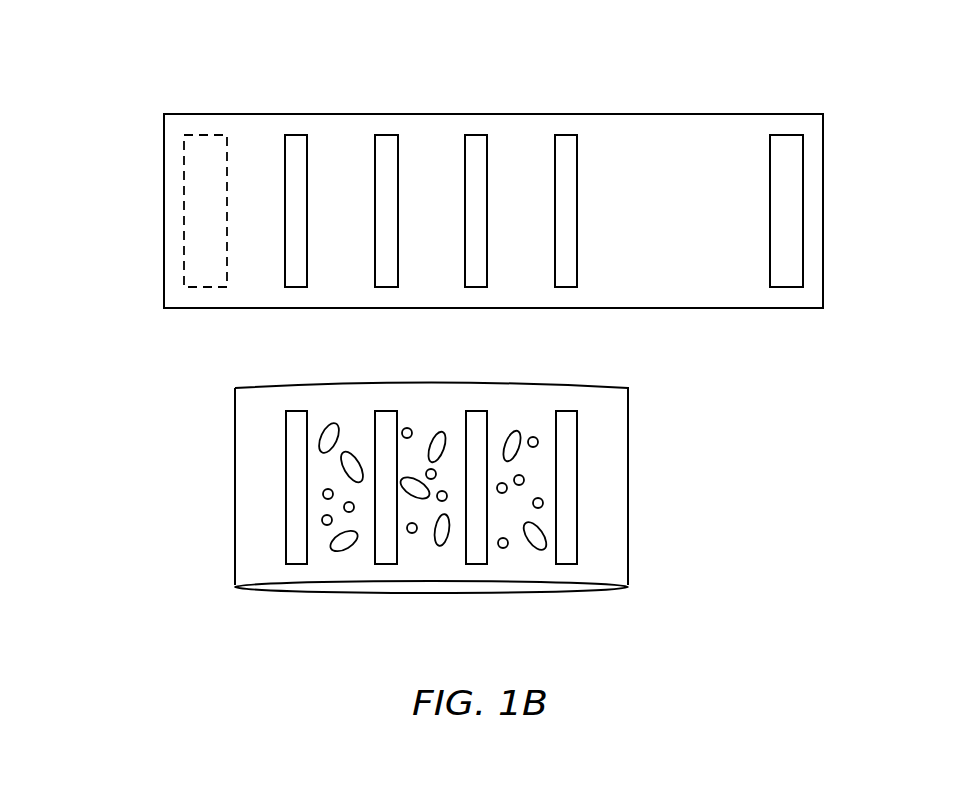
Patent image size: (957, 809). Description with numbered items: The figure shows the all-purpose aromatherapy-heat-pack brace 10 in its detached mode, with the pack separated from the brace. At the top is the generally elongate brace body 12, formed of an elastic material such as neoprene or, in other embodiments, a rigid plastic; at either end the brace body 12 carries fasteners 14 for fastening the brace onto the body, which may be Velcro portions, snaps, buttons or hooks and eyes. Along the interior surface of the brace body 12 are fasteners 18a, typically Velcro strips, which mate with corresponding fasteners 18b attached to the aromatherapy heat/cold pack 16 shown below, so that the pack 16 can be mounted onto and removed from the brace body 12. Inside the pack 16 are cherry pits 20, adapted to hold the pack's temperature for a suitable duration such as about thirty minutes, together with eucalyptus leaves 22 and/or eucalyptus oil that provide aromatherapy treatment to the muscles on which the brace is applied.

The all-purpose aromatherapy-heat-pack brace 10 is at (339, 531).
The brace body 12 is at (650, 128).
The fasteners 14 is at (192, 193).
The aromatherapy heat/cold pack 16 is at (572, 570).
The fasteners 18a is at (565, 147).
The fasteners 18b is at (297, 558).
The cherry pits 20 is at (443, 501).
The eucalyptus leaves 22 is at (382, 557).